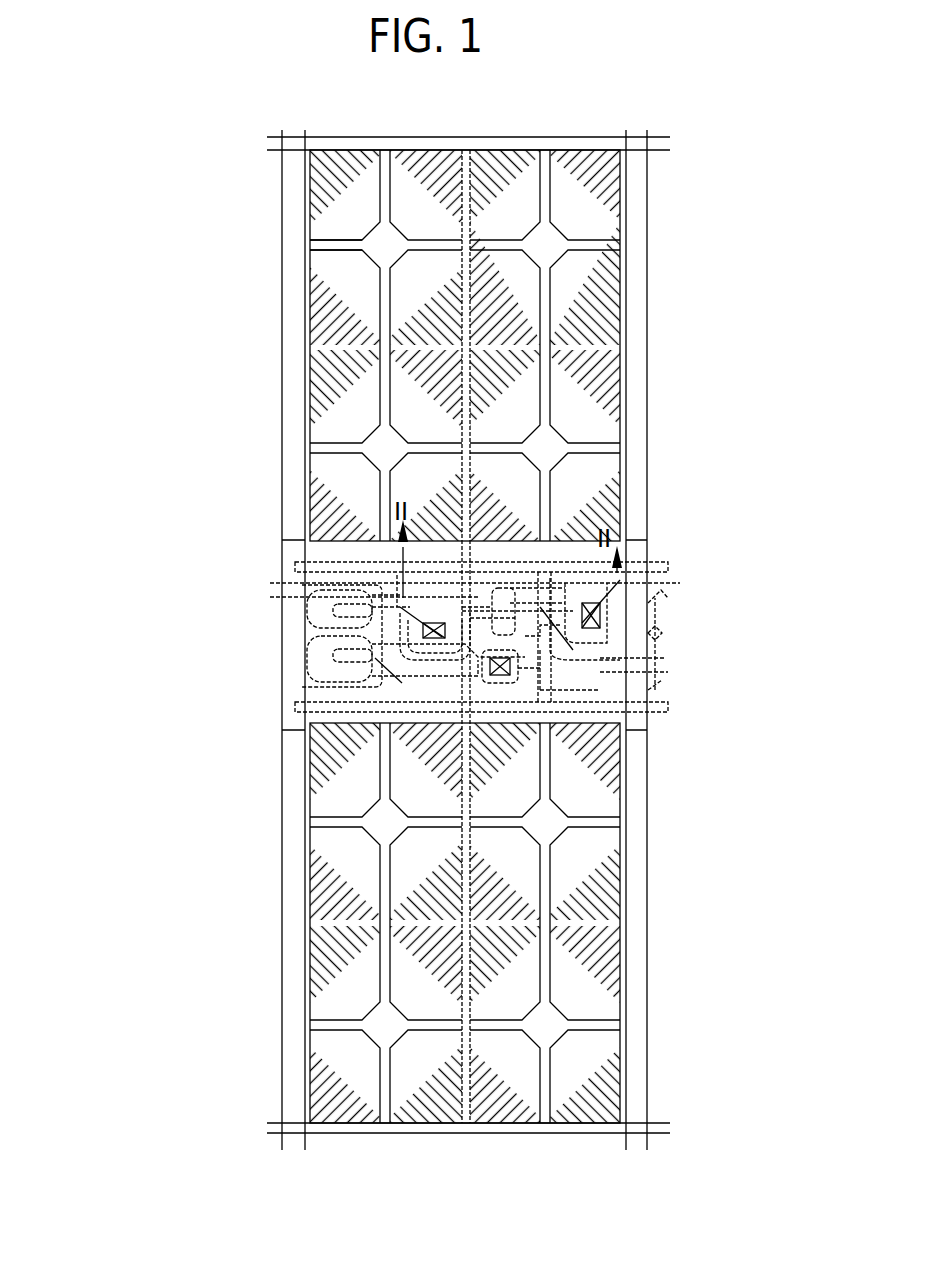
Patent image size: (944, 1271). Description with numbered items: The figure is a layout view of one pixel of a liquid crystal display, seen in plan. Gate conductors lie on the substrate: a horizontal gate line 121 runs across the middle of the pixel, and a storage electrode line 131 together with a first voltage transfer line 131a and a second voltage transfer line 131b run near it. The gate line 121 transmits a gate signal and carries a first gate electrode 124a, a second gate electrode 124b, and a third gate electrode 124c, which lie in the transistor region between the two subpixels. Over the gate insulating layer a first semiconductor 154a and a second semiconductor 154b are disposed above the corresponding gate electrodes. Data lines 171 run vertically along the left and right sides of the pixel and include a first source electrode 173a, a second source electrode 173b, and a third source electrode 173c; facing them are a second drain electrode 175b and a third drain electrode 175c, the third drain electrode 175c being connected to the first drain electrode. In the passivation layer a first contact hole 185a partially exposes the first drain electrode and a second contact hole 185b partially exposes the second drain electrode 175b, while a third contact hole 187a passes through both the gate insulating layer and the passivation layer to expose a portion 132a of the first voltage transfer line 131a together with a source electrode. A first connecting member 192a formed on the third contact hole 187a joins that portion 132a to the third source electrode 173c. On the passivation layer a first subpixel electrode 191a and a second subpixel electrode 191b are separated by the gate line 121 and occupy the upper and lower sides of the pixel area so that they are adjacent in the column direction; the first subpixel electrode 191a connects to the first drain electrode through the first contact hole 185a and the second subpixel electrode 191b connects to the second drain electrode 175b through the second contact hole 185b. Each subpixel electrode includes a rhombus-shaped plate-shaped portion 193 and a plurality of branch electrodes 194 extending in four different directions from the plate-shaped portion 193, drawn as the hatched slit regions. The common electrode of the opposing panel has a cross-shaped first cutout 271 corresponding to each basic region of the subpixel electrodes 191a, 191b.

The gate line 121 is at (292, 583).
The first gate electrode 124a is at (320, 605).
The second gate electrode 124b is at (320, 660).
The third gate electrode 124c is at (495, 690).
The storage electrode line 131 is at (443, 134).
The first voltage transfer line 131a is at (295, 560).
The second voltage transfer line 131b is at (296, 705).
The portion of the first voltage transfer line 132a is at (655, 620).
The first semiconductor 154a is at (405, 615).
The second semiconductor 154b is at (470, 660).
The data line 171 is at (622, 142).
The first source electrode 173a is at (392, 600).
The second source electrode 173b is at (400, 655).
The third source electrode 173c is at (620, 530).
The second drain electrode 175b is at (500, 665).
The third drain electrode 175c is at (478, 572).
The first contact hole 185a is at (440, 610).
The second contact hole 185b is at (560, 700).
The third contact hole 187a is at (660, 640).
The first subpixel electrode 191a is at (620, 197).
The second subpixel electrode 191b is at (620, 870).
The first connecting member 192a is at (650, 672).
The plate-shaped portion 193 is at (587, 222).
The branch electrodes 194 is at (627, 182).
The first cutout 271 is at (335, 253).